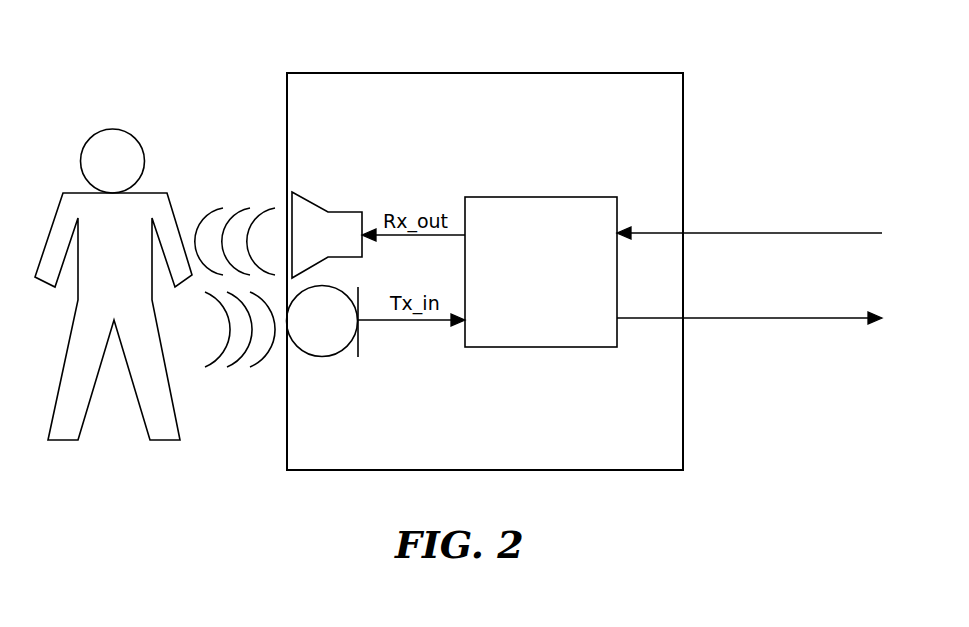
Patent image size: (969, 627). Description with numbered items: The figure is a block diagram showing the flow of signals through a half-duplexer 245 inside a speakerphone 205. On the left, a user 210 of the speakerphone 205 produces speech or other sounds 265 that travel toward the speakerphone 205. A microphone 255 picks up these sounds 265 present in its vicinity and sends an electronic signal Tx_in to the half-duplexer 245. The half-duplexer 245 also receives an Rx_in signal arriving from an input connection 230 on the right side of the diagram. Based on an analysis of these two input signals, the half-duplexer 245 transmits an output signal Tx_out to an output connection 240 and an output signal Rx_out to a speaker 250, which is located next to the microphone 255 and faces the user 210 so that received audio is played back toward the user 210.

The speakerphone 205 is at (482, 73).
The user 210 is at (112, 130).
The input connection 230 is at (810, 233).
The output connection 240 is at (810, 318).
The half-duplexer 245 is at (540, 197).
The speaker 250 is at (313, 203).
The microphone 255 is at (320, 358).
The speech or other sounds 265 is at (228, 373).